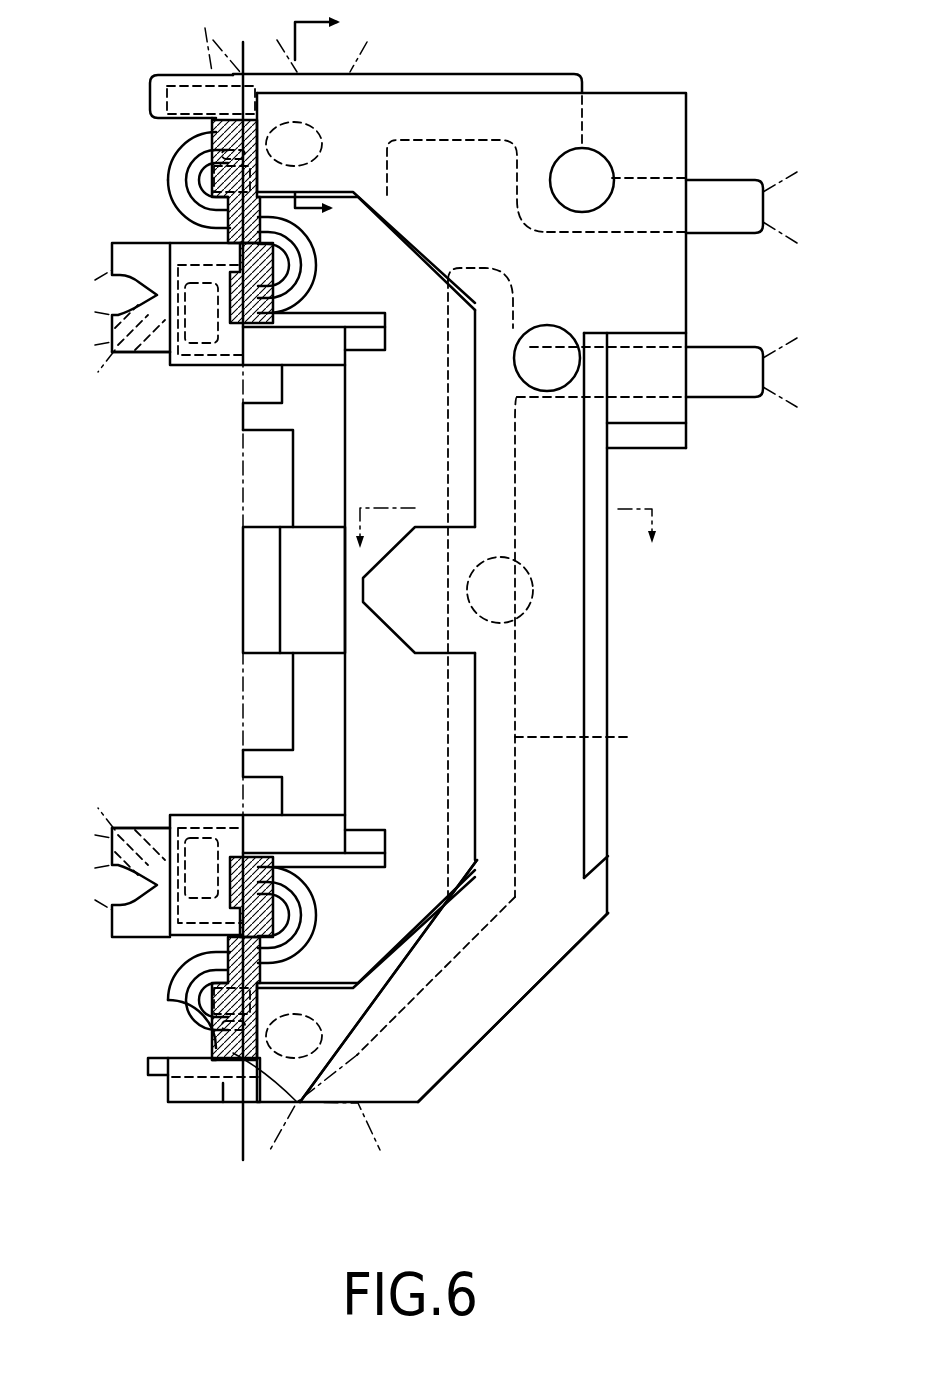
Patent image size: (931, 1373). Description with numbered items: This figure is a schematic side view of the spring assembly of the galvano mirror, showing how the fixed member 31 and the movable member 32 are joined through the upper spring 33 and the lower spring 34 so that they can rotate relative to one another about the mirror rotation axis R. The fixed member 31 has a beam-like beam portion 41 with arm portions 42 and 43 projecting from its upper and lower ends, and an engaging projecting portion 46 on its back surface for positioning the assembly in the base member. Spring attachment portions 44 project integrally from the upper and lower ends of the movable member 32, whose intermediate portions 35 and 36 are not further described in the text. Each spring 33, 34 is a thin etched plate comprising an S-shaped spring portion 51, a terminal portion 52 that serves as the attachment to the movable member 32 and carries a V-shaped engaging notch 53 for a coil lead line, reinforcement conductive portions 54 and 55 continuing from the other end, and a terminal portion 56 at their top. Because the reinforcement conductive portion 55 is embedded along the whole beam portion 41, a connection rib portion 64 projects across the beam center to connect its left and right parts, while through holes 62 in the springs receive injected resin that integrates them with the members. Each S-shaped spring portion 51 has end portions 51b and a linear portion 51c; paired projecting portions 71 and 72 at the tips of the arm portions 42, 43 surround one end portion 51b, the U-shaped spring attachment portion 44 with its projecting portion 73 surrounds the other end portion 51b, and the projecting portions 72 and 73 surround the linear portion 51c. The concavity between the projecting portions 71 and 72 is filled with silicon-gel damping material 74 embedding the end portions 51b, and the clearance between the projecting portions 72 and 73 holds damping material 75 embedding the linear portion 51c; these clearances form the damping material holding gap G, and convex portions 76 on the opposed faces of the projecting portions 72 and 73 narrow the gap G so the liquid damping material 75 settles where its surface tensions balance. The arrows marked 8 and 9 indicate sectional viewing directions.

The fixed member 31 is at (630, 812).
The movable member 32 is at (292, 690).
The spring 33 is at (138, 125).
The spring 34 is at (138, 1072).
The enlarged central block 35 is at (243, 565).
The neck portion 36 is at (245, 418).
The beam portion 41 is at (610, 640).
The arm portion 42 is at (400, 110).
The arm portion 43 is at (491, 1029).
The spring attachment portion 44 is at (195, 366).
The engaging projecting portion 46 is at (672, 449).
The S-shaped spring portion 51 is at (186, 178).
The end portion 51b is at (230, 127).
The linear portion 51c is at (275, 195).
The terminal portion 52 is at (135, 353).
The V-shaped engaging notch 53 is at (112, 305).
The reinforcement conductive portion 54 is at (483, 518).
The reinforcement conductive portion 55 is at (511, 884).
The terminal portion 56 is at (740, 180).
The through hole 62 is at (438, 1108).
The connection rib portion 64 is at (400, 640).
The projecting portion 71 is at (185, 1104).
The projecting portion 72 is at (212, 186).
The projecting portion 73 is at (285, 286).
The damping material 74 is at (210, 128).
The damping material 75 is at (200, 238).
The convex portion 76 is at (268, 178).
The damping material holding gap G is at (290, 140).
The mirror rotation axis R is at (247, 62).
The section line 8- 8 is at (321, 123).
The section line 9- 9 is at (506, 508).